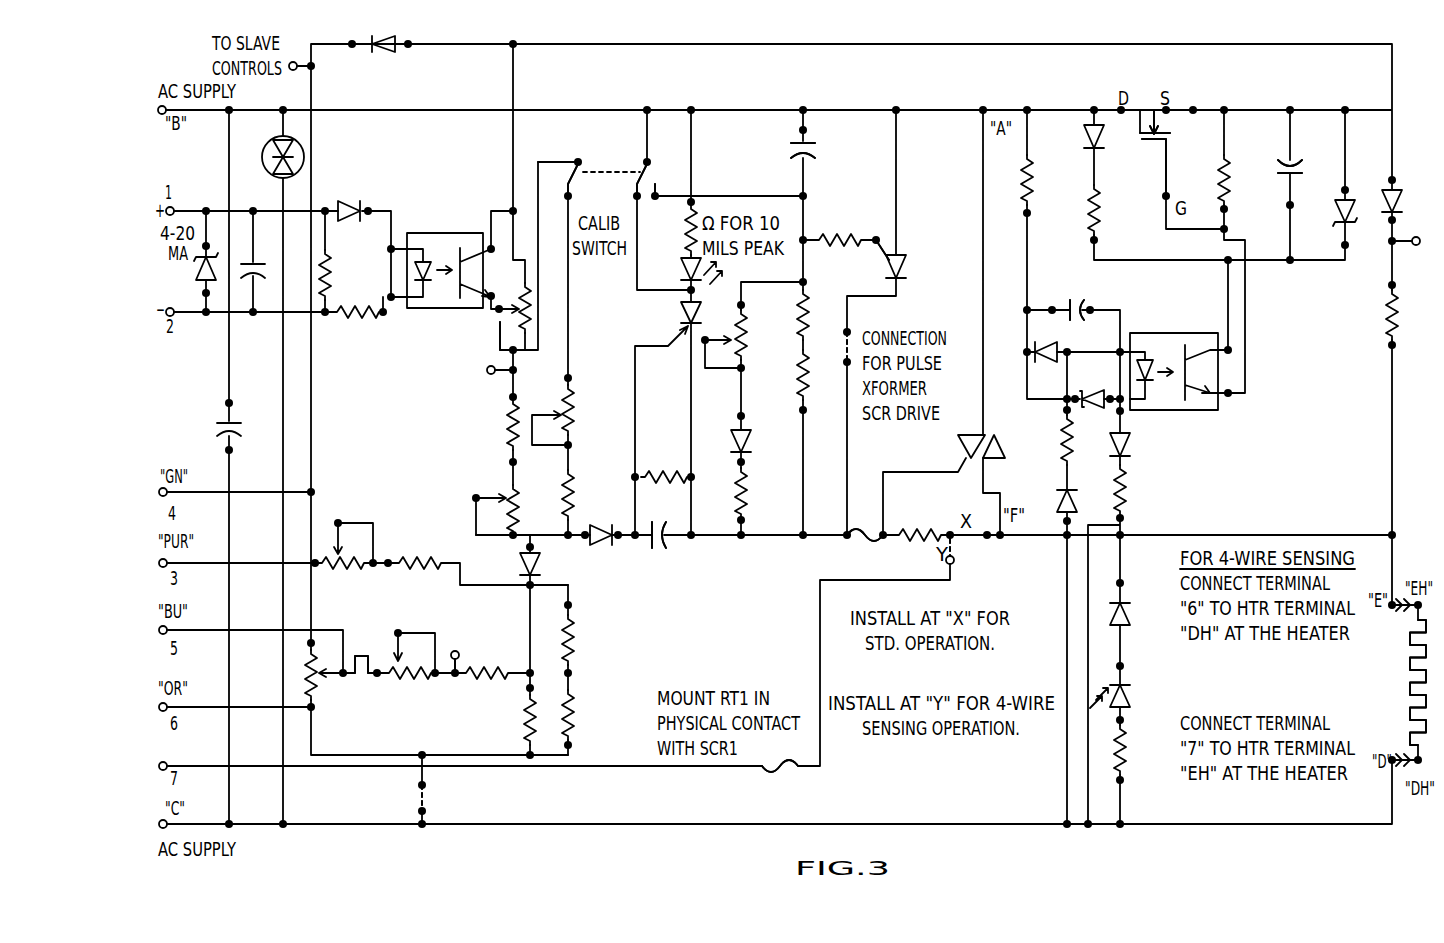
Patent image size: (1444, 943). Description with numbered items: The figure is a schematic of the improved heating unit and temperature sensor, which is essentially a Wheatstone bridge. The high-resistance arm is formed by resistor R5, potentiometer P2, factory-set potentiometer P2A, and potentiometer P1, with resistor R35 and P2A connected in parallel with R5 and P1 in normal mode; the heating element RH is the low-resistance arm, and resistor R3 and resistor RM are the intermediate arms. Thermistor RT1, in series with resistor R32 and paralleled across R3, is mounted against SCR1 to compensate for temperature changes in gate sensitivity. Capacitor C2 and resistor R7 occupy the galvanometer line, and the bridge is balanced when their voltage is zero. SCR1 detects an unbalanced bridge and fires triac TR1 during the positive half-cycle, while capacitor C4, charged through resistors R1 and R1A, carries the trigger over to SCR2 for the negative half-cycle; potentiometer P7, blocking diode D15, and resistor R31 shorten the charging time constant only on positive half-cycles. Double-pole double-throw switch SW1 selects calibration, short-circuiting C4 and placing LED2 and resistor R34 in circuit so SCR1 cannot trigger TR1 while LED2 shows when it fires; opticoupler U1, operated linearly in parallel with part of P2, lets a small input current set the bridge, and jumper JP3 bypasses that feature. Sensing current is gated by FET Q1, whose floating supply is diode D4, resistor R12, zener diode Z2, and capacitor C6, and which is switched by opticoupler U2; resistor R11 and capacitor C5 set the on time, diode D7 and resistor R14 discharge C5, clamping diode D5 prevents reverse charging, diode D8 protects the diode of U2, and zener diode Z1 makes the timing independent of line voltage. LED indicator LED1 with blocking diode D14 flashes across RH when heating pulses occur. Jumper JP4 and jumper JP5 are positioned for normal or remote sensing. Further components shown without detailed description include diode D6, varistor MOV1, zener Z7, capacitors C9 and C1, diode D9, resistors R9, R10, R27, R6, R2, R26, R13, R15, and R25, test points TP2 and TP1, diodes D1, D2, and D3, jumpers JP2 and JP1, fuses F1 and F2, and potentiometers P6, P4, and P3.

The diode D6 is at (383, 56).
The metal oxide varistor MOV1 is at (272, 147).
The zener diode Z7 is at (196, 310).
The capacitor C9 is at (260, 316).
The capacitor C1 is at (198, 417).
The diode D9 is at (348, 198).
The resistor R9 is at (339, 275).
The resistor R10 is at (358, 325).
The opticoupler U1 is at (435, 268).
The potentiometer P2 is at (515, 306).
The jumper JP3 is at (489, 337).
The test point TP2 is at (486, 370).
The resistor R5 is at (499, 425).
The potentiometer P1 is at (501, 510).
The potentiometer P2A is at (587, 410).
The resistor R35 is at (585, 495).
The double-pole double-throw switch SW1 is at (601, 175).
The resistor R34 is at (676, 230).
The LED LED2 is at (682, 274).
The silicon controlled rectifier SCR1 is at (673, 352).
The resistor R27 is at (666, 464).
The diode D1 is at (519, 569).
The diode D2 is at (602, 550).
The capacitor C2 is at (657, 573).
The potentiometer P7 is at (731, 340).
The diode D15 is at (758, 431).
The resistor R31 is at (760, 493).
The resistor R1 is at (793, 315).
The resistor R1A is at (789, 375).
The capacitor C4 is at (826, 147).
The resistor R6 is at (840, 243).
The silicon controlled rectifier SCR2 is at (912, 272).
The jumper JP2 is at (831, 348).
The fuse F1 is at (865, 552).
The resistor R7 is at (920, 513).
The jumper JP5 is at (968, 552).
The triac TR1 is at (973, 453).
The fuse F2 is at (780, 784).
The jumper JP4 is at (571, 798).
The potentiometer P6 is at (345, 546).
The resistor R26 is at (420, 577).
The potentiometer P4 is at (322, 678).
The jumper JP1 is at (364, 651).
The potentiometer P3 is at (410, 659).
The test point TP1 is at (456, 651).
The resistor R2 is at (487, 687).
The resistor R3 is at (516, 720).
The resistor R32 is at (585, 715).
The thermistor RT1 is at (617, 647).
The resistor R11 is at (1043, 180).
The diode D4 is at (1079, 137).
The resistor R12 is at (1077, 210).
The FET switch Q1 is at (1145, 165).
The resistor R13 is at (1207, 180).
The capacitor C6 is at (1277, 184).
The zener diode Z2 is at (1333, 213).
The diode D3 is at (1406, 196).
The resistor RM is at (1366, 310).
The capacitor C5 is at (1075, 298).
The clamping diode D5 is at (1046, 366).
The zener diode Z1 is at (1092, 386).
The opticoupler U2 is at (1171, 373).
The resistor R14 is at (1050, 440).
The diode D7 is at (1055, 499).
The diode D8 is at (1135, 443).
The resistor R15 is at (1137, 490).
The blocking diode D14 is at (1139, 613).
The LED output indicator LED1 is at (1133, 700).
The resistor R25 is at (1140, 750).
The heating element RH is at (1398, 682).